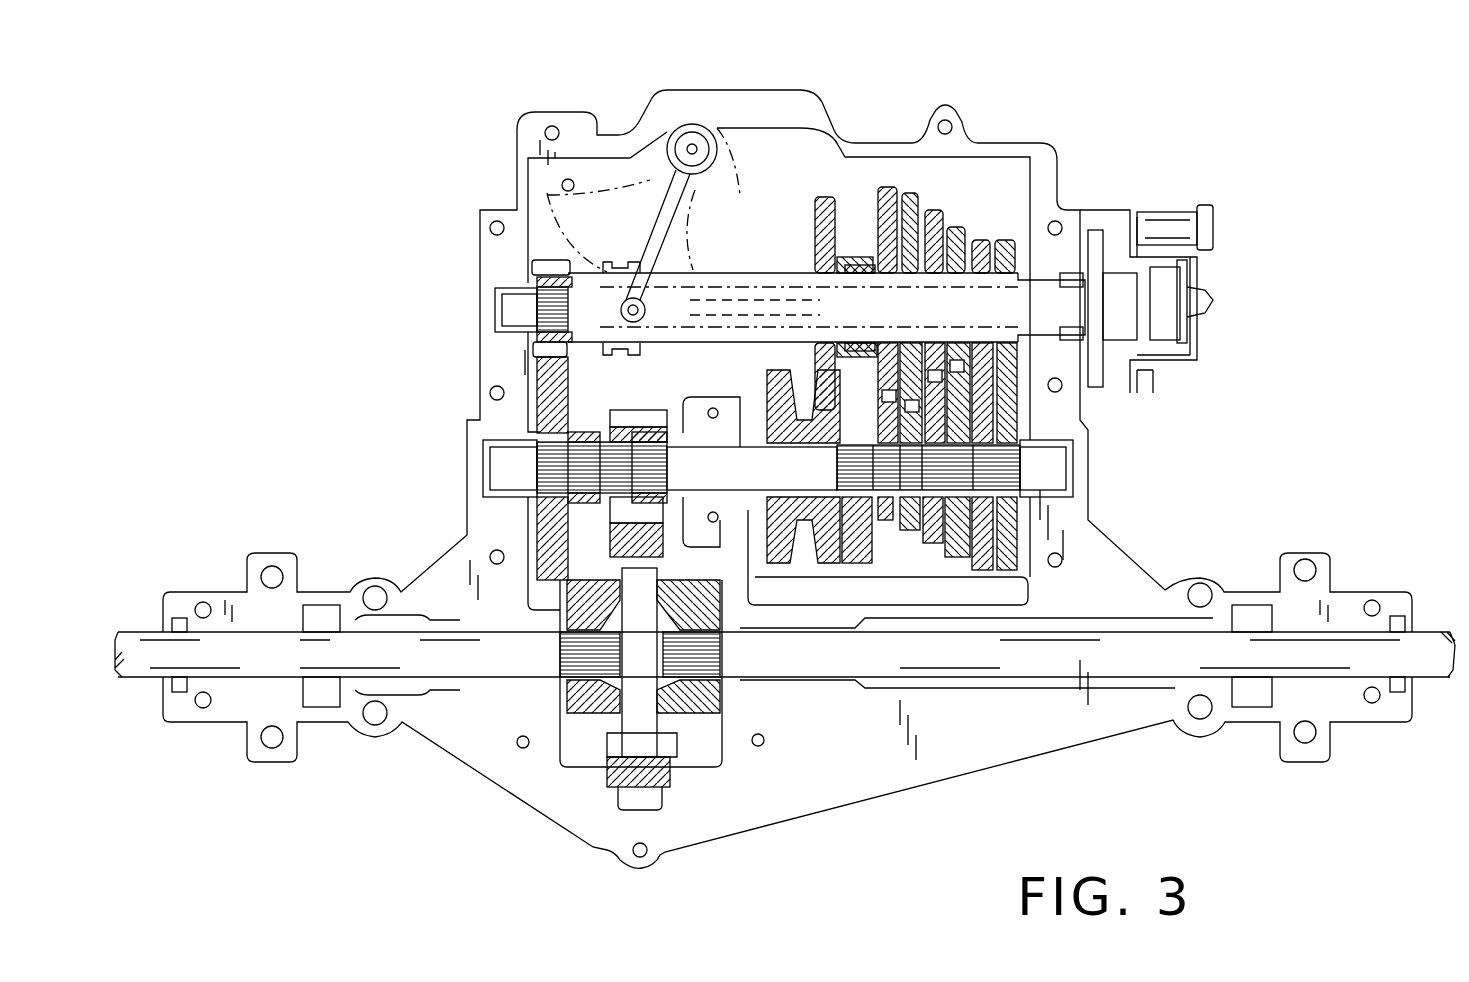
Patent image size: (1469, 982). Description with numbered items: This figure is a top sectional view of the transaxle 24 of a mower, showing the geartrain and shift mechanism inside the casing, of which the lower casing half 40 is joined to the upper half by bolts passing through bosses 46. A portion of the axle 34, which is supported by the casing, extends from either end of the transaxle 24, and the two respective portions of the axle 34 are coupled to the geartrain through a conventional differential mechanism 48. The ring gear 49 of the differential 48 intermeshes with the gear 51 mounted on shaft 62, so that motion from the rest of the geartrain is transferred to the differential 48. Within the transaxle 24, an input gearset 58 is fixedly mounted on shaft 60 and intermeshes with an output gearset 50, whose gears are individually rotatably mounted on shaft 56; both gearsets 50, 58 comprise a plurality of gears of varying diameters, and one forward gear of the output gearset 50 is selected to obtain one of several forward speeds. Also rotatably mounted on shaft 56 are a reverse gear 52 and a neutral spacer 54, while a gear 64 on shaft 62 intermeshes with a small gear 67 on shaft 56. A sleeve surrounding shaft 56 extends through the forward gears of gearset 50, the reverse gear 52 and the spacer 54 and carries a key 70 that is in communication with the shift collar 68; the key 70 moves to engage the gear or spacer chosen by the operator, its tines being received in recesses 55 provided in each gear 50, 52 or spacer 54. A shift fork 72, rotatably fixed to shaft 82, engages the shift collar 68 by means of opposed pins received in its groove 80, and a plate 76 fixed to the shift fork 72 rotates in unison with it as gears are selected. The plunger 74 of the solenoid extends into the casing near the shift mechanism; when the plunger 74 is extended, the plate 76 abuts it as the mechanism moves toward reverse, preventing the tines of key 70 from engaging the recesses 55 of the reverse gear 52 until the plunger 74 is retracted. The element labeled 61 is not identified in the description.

The transaxle 24 is at (1309, 254).
The axle 34 is at (138, 672).
The lower casing half 40 is at (833, 812).
The bosses 46 is at (648, 858).
The differential mechanism 48 is at (746, 693).
The ring gear 49 is at (662, 777).
The output gearset 50 is at (937, 220).
The gear 51 is at (640, 417).
The reverse gear 52 is at (820, 203).
The neutral spacer 54 is at (845, 262).
The recesses 55 is at (858, 343).
The shaft 56 is at (512, 306).
The input gearset 58 is at (1075, 415).
The shaft 60 is at (1053, 470).
The shaft bore 61 is at (722, 330).
The shaft 62 is at (502, 465).
The gear 64 is at (550, 547).
The small gear 67 is at (536, 262).
The shift collar 68 is at (617, 342).
The key 70 is at (766, 275).
The shift fork 72 is at (703, 183).
The plunger 74 is at (575, 180).
The plate 76 is at (522, 200).
The groove 80 is at (612, 265).
The shaft 82 is at (697, 135).